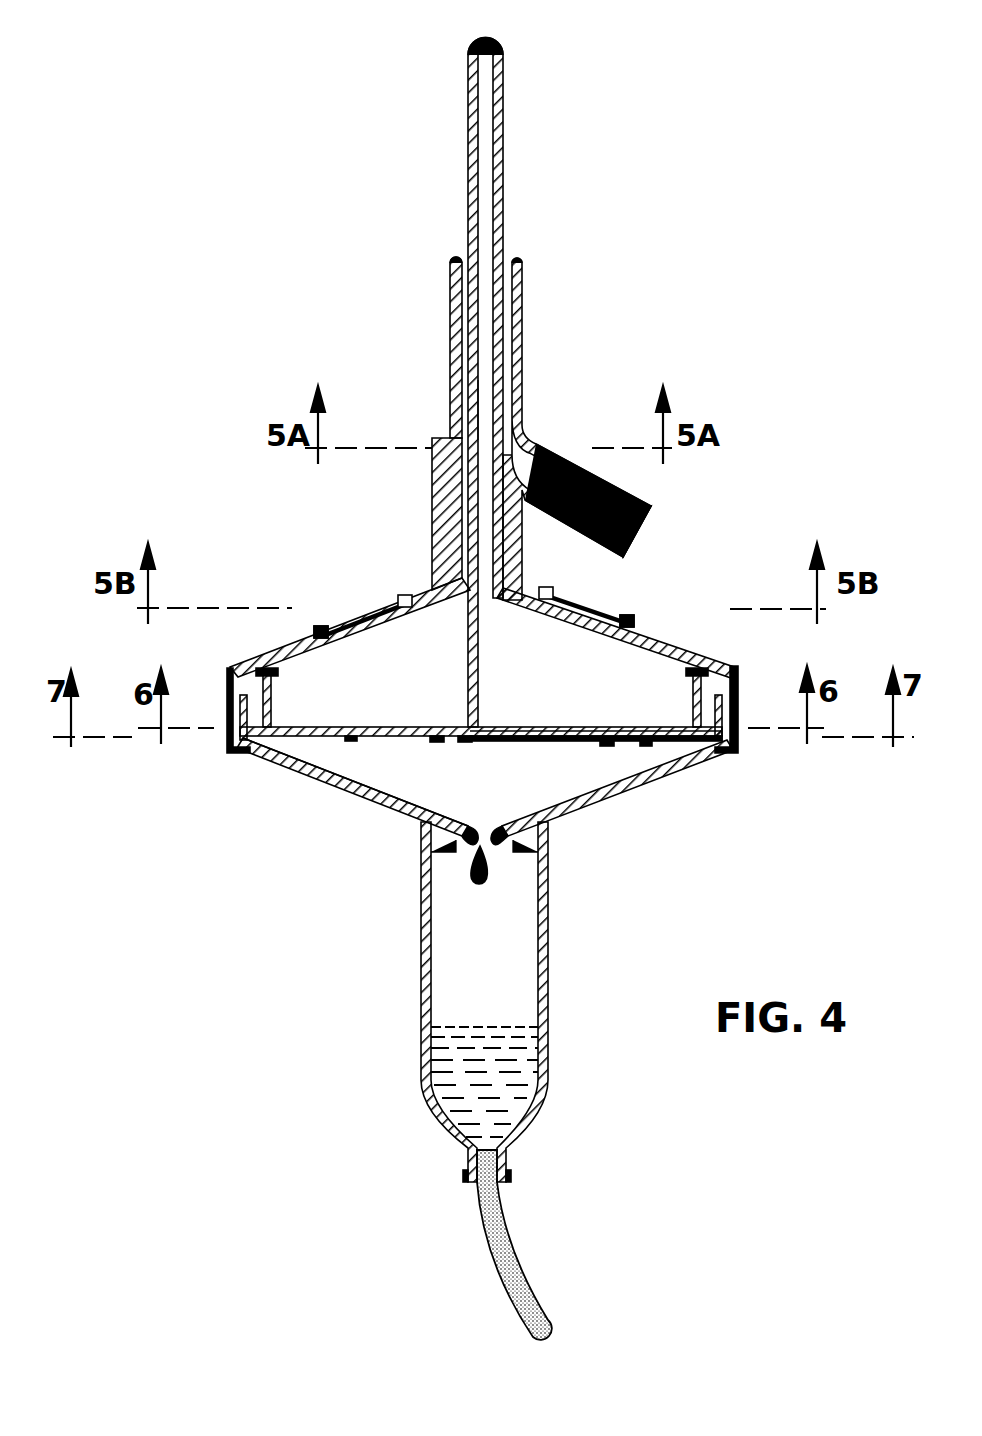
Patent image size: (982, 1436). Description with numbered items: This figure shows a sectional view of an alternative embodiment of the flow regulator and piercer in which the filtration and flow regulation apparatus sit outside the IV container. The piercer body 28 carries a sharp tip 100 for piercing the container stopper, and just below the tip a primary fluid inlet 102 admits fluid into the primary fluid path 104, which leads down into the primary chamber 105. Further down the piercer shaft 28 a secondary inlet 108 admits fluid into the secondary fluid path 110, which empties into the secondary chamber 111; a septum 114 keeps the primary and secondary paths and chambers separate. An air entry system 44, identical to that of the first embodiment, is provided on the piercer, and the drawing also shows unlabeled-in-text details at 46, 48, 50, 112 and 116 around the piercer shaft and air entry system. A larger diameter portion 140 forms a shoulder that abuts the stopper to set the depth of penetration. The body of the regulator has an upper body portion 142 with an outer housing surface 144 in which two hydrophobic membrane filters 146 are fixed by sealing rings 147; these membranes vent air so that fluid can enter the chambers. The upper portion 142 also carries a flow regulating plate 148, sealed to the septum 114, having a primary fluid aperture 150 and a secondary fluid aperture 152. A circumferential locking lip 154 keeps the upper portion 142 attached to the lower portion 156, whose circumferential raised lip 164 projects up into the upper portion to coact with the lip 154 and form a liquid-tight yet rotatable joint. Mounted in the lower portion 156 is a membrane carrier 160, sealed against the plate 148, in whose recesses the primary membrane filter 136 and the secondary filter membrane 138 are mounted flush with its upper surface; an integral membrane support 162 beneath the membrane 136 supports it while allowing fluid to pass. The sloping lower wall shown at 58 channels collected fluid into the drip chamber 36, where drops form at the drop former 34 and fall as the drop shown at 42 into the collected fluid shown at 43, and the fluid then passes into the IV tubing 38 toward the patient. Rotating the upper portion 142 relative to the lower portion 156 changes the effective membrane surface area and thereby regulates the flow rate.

The piercer body 28 is at (368, 297).
The drop former 34 is at (508, 838).
The drip chamber 36 is at (423, 938).
The IV tubing 38 is at (505, 1238).
The liquid drop 42 is at (482, 886).
The collected liquid 43 is at (450, 1030).
The air entry system 44 is at (655, 489).
The side arm end cap 46 is at (641, 538).
The ball 48 is at (553, 465).
The outer sleeve 50 is at (512, 338).
The lower conical wall 58 is at (378, 800).
The sharp tip 100 is at (472, 46).
The primary fluid inlet 102 is at (490, 58).
The primary fluid path 104 is at (487, 195).
The primary chamber 105 is at (652, 643).
The secondary inlet 108 is at (455, 262).
The secondary fluid path 110 is at (464, 392).
The secondary chamber 111 is at (355, 660).
The sleeve right wall top 112 is at (515, 262).
The septum 114 is at (472, 418).
The sleeve bore 116 is at (506, 298).
The primary membrane filter 136 is at (628, 724).
The secondary filter membrane 138 is at (452, 741).
The larger diameter portion 140 is at (432, 498).
The upper body portion 142 is at (760, 667).
The outer housing surface 144 is at (693, 641).
The hydrophobic membrane filters 146 is at (405, 597).
The sealing rings 147 is at (320, 626).
The flow regulating plate 148 is at (350, 726).
The primary fluid aperture 150 is at (582, 724).
The secondary fluid aperture 152 is at (445, 726).
The circumferential locking lip 154 is at (234, 742).
The lower portion 156 is at (684, 812).
The membrane carrier 160 is at (330, 772).
The membrane support 162 is at (610, 742).
The circumferential raised lip 164 is at (236, 676).